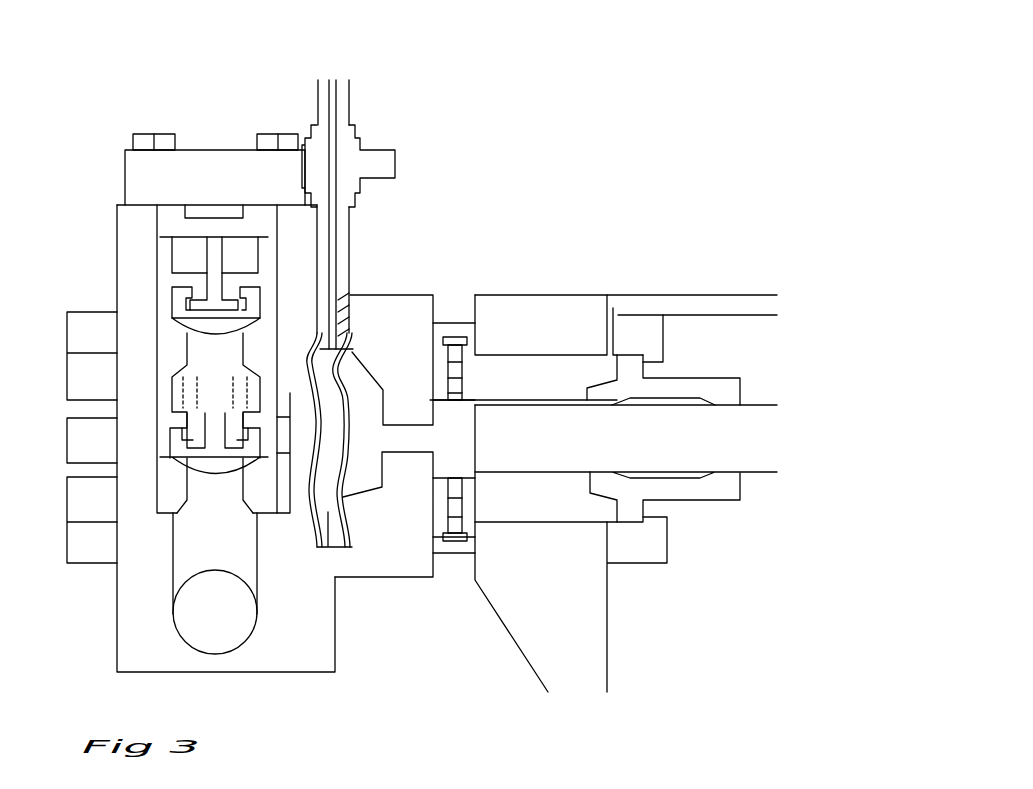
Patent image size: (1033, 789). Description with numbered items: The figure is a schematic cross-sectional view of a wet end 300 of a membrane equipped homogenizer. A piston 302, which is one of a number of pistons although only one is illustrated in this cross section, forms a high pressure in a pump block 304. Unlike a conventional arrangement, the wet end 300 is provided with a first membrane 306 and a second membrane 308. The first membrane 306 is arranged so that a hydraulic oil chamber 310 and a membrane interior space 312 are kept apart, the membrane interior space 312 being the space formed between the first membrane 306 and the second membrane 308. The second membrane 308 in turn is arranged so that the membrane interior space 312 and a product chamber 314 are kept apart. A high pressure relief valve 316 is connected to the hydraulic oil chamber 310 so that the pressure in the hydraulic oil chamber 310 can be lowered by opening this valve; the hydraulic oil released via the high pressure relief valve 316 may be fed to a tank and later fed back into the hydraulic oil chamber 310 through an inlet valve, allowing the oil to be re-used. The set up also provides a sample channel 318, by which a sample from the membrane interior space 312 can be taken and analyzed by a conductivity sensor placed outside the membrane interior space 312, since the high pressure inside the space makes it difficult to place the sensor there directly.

The wet end 300 is at (104, 114).
The piston 302 is at (693, 430).
The pump block 304 is at (137, 648).
The first membrane 306 is at (352, 492).
The second membrane 308 is at (320, 498).
The hydraulic oil chamber 310 is at (368, 457).
The membrane interior space 312 is at (330, 556).
The product chamber 314 is at (305, 395).
The high pressure relief valve 316 is at (452, 336).
The sample channel 318 is at (338, 272).